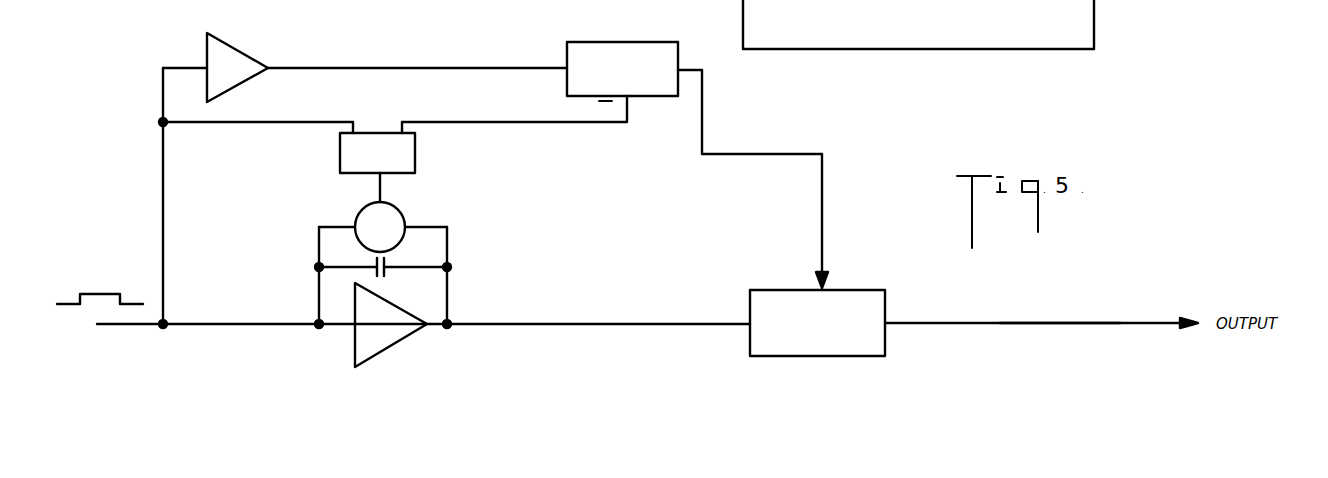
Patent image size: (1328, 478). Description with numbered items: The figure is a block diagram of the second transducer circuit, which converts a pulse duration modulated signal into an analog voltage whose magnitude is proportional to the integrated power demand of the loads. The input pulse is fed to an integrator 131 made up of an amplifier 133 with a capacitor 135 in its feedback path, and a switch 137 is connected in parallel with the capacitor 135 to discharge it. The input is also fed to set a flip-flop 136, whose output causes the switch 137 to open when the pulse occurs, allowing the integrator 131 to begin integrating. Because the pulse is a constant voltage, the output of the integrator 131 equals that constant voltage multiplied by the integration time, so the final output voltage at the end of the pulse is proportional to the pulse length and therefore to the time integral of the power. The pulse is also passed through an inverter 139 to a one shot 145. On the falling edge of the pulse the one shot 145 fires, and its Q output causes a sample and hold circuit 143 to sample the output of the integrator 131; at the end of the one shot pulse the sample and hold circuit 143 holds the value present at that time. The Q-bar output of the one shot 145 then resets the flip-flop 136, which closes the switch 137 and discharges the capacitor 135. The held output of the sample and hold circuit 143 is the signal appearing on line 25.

The line 25 is at (1057, 322).
The integrator 131 is at (390, 335).
The amplifier 133 is at (417, 303).
The capacitor 135 is at (386, 262).
The flip-flop 136 is at (415, 163).
The switch 137 is at (398, 208).
The inverter 139 is at (232, 43).
The sample and hold circuit 143 is at (870, 297).
The one shot 145 is at (642, 42).